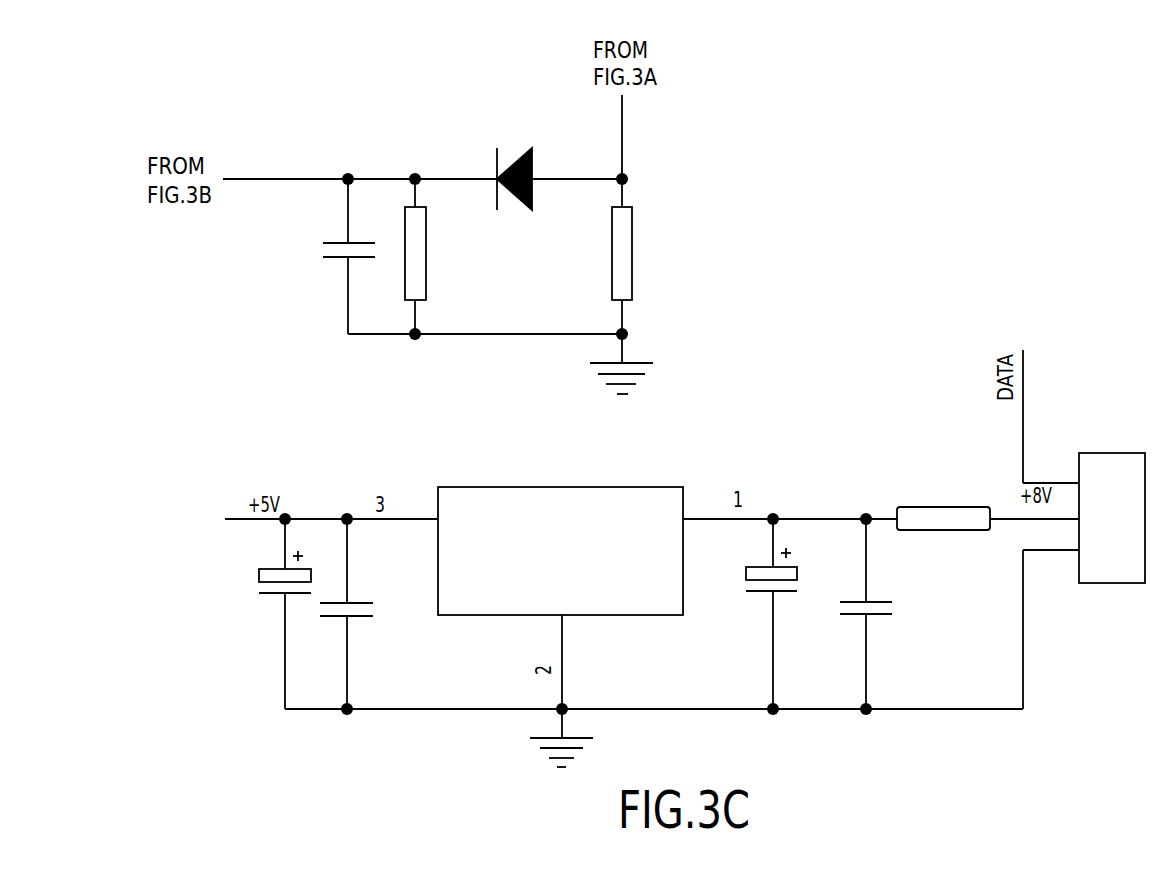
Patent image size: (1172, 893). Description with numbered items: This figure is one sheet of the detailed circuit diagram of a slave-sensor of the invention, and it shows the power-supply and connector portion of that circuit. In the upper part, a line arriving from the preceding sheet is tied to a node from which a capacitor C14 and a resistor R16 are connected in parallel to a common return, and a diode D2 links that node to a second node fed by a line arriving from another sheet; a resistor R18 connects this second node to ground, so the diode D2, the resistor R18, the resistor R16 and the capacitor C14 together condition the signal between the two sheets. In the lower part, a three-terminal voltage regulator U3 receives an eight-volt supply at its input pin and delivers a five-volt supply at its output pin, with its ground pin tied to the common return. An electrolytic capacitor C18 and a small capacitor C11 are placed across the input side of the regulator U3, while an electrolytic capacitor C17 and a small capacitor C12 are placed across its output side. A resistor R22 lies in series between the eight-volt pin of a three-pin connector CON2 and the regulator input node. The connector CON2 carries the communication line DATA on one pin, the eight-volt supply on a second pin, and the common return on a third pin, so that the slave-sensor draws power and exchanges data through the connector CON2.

The capacitor C14 (101) C14 is at (330, 256).
The resistor R16 (820K) R16 is at (439, 256).
The diode D2 is at (513, 161).
The resistor R18 (120K) R18 is at (646, 256).
The voltage regulator U3 (7805) U3 is at (560, 572).
The electrolytic capacitor C17 (100UF/10V) C17 is at (249, 614).
The capacitor C12 (102) C12 is at (365, 614).
The electrolytic capacitor C18 (100UF/10V) C18 is at (732, 614).
The capacitor C11 (101) C11 is at (885, 614).
The resistor R22 (10) R22 is at (943, 493).
The connector CON2 is at (1112, 505).